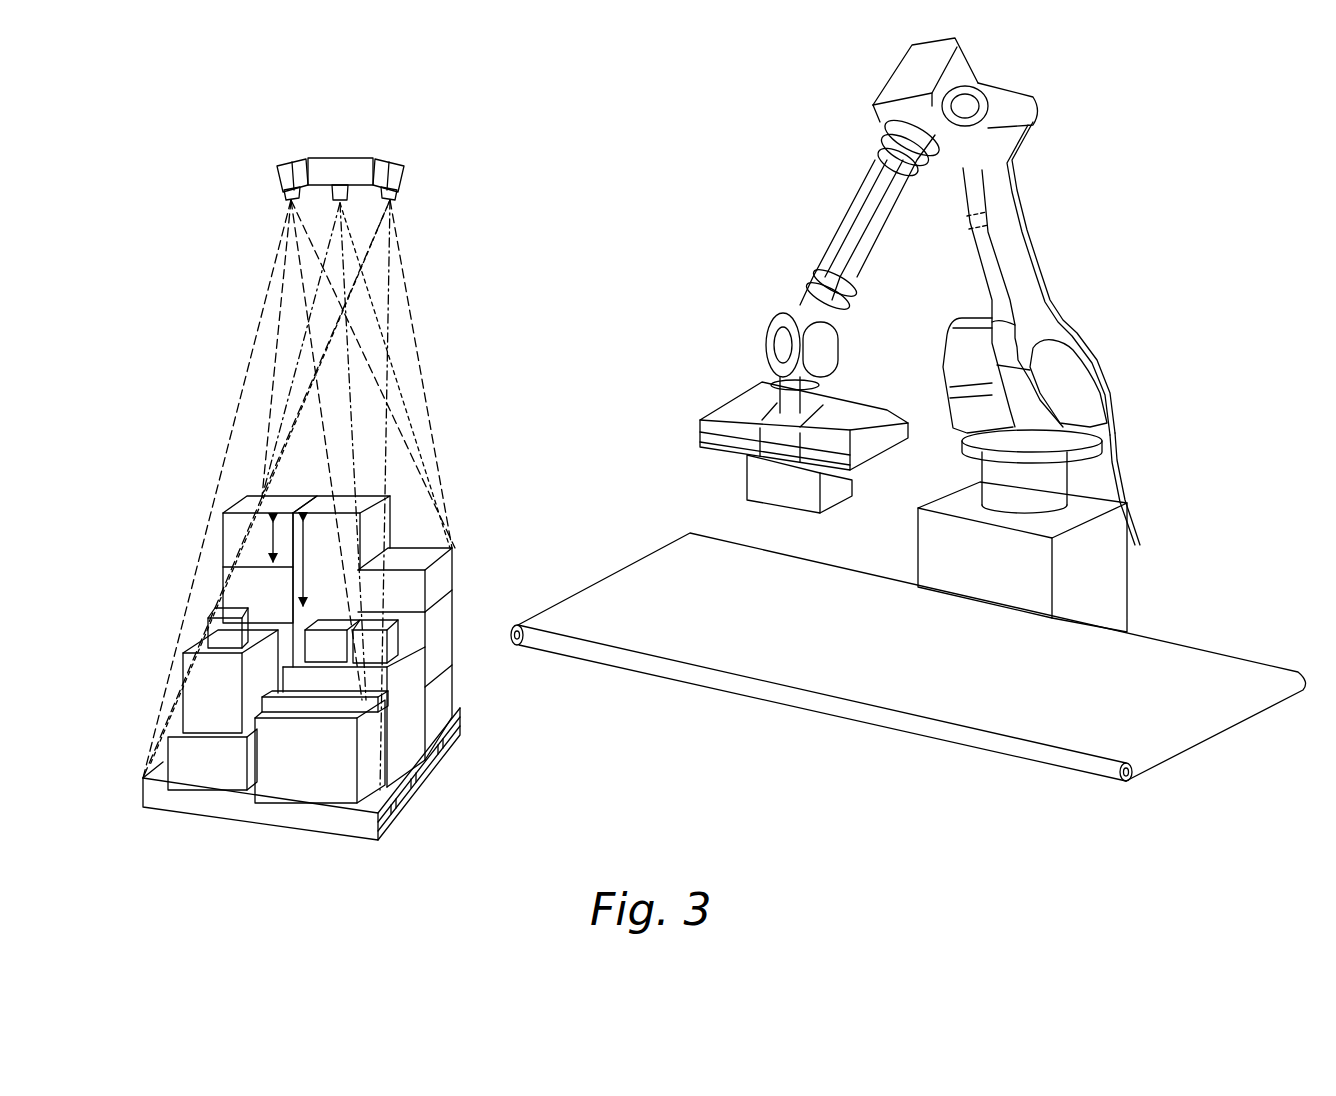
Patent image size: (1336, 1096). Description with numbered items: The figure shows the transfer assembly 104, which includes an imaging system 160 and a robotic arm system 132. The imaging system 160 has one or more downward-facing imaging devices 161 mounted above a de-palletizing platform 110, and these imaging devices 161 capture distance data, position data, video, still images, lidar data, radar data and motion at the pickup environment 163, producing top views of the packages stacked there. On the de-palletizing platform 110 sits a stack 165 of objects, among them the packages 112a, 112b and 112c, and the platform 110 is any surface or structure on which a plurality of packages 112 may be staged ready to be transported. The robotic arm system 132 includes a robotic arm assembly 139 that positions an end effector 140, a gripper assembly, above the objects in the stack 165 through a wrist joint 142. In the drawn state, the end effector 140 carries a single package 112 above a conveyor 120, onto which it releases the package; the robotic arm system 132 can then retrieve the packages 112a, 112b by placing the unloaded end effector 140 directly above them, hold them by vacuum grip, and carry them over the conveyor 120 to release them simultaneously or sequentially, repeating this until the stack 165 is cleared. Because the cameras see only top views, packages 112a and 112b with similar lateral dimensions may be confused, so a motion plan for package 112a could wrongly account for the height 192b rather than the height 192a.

The transfer assembly 104 is at (927, 334).
The de-palletizing platform 110 is at (372, 860).
The package 112 is at (290, 778).
The package 112a is at (232, 540).
The package 112b is at (372, 527).
The third object 112c is at (208, 630).
The conveyor 120 is at (1205, 655).
The robotic arm system 132 is at (1068, 241).
The robotic arm assembly 139 is at (1068, 298).
The end effector 140 is at (896, 386).
The wrist joint 142 is at (815, 388).
The imaging system 160 is at (252, 187).
The imaging devices 161 is at (291, 162).
The pickup environment 163 is at (113, 562).
The stack 165 is at (206, 594).
The height 192a is at (270, 520).
The height 192b is at (300, 516).